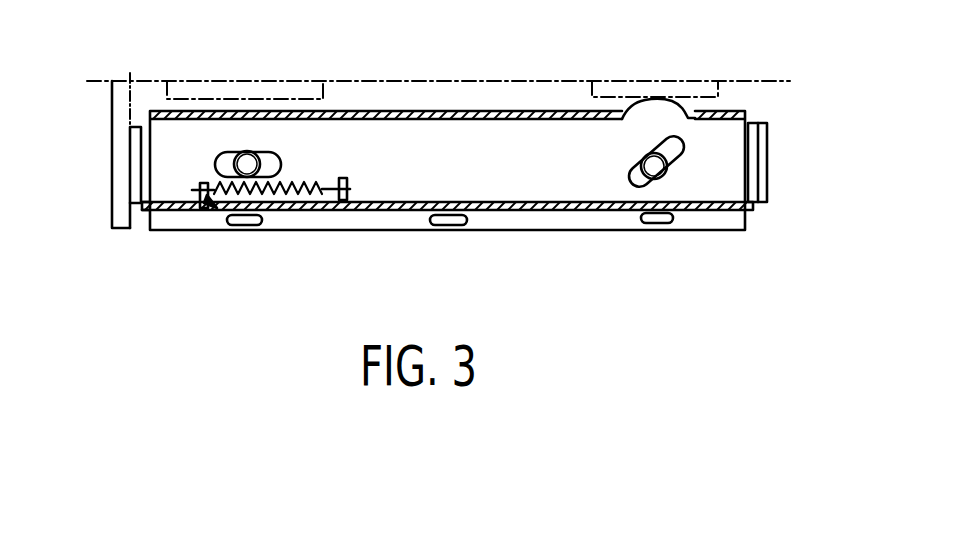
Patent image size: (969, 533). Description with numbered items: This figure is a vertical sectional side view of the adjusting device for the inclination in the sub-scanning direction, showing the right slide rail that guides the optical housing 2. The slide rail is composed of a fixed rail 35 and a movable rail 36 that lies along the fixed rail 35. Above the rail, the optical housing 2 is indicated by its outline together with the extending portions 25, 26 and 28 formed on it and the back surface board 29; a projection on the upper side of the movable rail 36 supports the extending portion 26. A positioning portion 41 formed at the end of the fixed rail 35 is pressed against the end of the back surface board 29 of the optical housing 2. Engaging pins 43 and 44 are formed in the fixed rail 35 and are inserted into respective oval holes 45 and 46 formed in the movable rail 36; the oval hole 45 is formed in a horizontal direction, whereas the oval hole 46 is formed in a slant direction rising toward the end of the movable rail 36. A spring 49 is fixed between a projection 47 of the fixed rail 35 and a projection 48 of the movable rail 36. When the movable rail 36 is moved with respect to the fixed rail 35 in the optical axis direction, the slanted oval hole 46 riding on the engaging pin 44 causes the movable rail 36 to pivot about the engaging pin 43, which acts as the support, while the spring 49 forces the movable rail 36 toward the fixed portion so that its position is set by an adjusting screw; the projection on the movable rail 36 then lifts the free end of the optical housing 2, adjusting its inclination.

The optical housing 2 is at (140, 80).
The extending portion 25 is at (293, 100).
The extending portion 26 is at (610, 97).
The extending portion 28 is at (658, 108).
The back surface board 29 is at (112, 152).
The fixed rail 35 is at (130, 203).
The movable rail 36 is at (443, 110).
The positioning portion 41 is at (133, 162).
The engaging pin 43 is at (248, 162).
The engaging pin 44 is at (644, 178).
The oval hole 45 is at (222, 160).
The oval hole 46 is at (668, 158).
The projection 47 is at (220, 203).
The projection 48 is at (347, 181).
The spring 49 is at (292, 196).